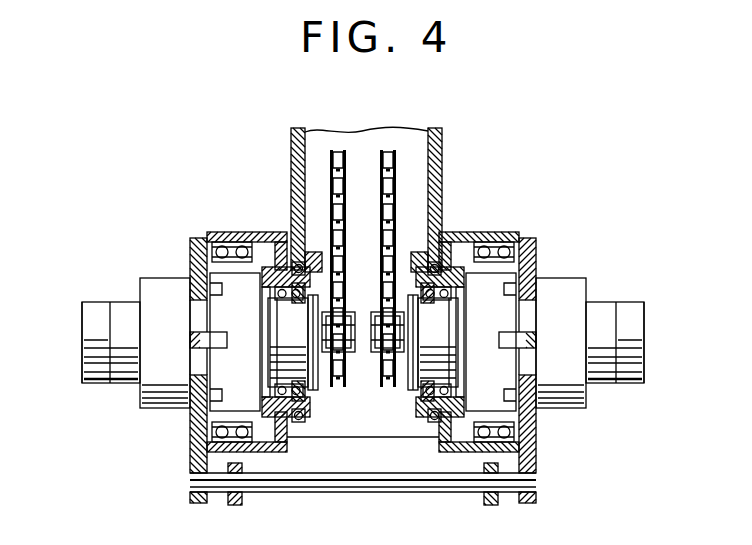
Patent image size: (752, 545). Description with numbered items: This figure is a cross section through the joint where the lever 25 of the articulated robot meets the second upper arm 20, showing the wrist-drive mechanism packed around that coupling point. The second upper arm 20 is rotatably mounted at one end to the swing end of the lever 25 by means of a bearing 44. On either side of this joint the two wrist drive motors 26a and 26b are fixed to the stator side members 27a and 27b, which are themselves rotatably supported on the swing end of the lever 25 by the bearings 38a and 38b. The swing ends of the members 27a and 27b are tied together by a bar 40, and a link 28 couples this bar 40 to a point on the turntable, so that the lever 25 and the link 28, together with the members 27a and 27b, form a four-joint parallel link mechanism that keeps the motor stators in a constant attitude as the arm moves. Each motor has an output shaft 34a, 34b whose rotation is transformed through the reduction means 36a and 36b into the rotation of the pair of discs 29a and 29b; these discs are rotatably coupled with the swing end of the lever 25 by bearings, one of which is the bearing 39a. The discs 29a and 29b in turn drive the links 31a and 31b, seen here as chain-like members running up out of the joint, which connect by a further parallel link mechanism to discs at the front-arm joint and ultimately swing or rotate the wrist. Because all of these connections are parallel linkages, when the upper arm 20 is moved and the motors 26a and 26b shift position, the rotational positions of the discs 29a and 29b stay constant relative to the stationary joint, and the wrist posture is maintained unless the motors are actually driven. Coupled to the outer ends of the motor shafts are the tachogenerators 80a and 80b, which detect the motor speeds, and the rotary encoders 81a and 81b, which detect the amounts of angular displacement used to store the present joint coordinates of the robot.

The second upper arm 20 is at (440, 129).
The lever 25 is at (268, 268).
The wrist drive motor 26a is at (158, 292).
The wrist drive motor 26b is at (573, 288).
The member 27a is at (188, 247).
The member 27b is at (531, 238).
The link 28 is at (238, 504).
The disc 29a is at (339, 360).
The disc 29b is at (404, 380).
The link 31a is at (328, 156).
The link 31b is at (396, 149).
The output shaft 34a is at (204, 337).
The output shaft 34b is at (522, 352).
The reduction means 36a is at (207, 407).
The reduction means 36b is at (522, 408).
The bearing 38a is at (217, 233).
The bearing 38b is at (518, 233).
The bearing 39a is at (284, 430).
The bar 40 is at (358, 477).
The bearing 44 is at (304, 250).
The tachogenerator 80a is at (122, 305).
The tachogenerator 80b is at (604, 304).
The rotary encoder 81a is at (88, 332).
The rotary encoder 81b is at (640, 335).